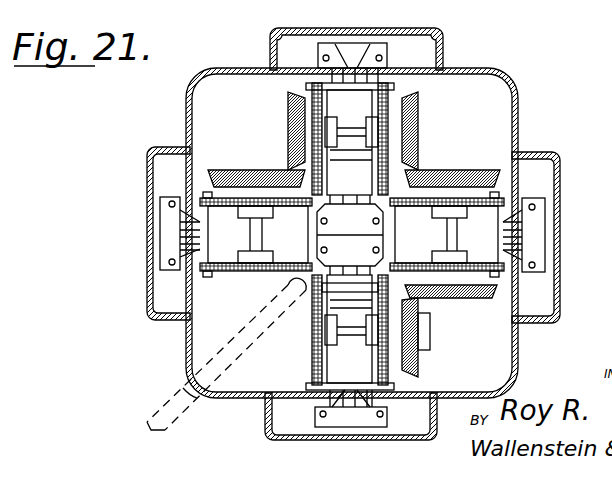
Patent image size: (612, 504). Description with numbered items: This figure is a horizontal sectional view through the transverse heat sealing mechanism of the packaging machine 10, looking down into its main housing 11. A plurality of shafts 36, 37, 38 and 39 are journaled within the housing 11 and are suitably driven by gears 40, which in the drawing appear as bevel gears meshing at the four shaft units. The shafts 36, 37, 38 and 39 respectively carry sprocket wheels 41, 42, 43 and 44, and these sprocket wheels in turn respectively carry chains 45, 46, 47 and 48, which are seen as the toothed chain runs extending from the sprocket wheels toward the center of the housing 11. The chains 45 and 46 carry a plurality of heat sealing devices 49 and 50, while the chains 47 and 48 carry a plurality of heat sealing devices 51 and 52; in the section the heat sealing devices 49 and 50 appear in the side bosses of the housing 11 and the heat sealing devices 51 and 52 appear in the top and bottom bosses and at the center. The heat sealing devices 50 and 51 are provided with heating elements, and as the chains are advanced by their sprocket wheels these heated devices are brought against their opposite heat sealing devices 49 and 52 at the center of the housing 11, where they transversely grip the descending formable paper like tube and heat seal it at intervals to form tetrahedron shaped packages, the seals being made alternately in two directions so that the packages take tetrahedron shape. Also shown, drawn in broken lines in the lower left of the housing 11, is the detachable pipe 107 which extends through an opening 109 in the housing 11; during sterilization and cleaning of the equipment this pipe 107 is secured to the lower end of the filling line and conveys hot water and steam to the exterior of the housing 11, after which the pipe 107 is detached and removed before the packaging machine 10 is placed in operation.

The packaging machine 10 is at (364, 234).
The main housing 11 is at (520, 105).
The shaft 36 is at (256, 234).
The shaft 37 is at (447, 234).
The shaft 38 is at (353, 138).
The shaft 39 is at (359, 332).
The gears 40 is at (288, 135).
The sprocket wheels 41 is at (240, 237).
The sprocket wheels 42 is at (475, 236).
The sprocket wheels 43 is at (352, 113).
The sprocket wheels 44 is at (390, 292).
The chain 45 is at (254, 168).
The chain 46 is at (433, 172).
The chain 47 is at (313, 88).
The chain 48 is at (318, 384).
The heat sealing devices 49 is at (187, 260).
The heat sealing devices 50 is at (528, 206).
The heat sealing devices 51 is at (387, 44).
The heat sealing devices 52 is at (387, 420).
The pipe 107 is at (172, 400).
The opening 109 is at (190, 400).